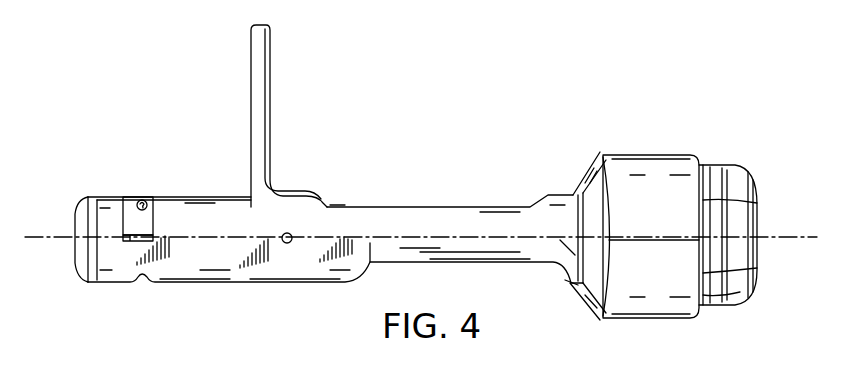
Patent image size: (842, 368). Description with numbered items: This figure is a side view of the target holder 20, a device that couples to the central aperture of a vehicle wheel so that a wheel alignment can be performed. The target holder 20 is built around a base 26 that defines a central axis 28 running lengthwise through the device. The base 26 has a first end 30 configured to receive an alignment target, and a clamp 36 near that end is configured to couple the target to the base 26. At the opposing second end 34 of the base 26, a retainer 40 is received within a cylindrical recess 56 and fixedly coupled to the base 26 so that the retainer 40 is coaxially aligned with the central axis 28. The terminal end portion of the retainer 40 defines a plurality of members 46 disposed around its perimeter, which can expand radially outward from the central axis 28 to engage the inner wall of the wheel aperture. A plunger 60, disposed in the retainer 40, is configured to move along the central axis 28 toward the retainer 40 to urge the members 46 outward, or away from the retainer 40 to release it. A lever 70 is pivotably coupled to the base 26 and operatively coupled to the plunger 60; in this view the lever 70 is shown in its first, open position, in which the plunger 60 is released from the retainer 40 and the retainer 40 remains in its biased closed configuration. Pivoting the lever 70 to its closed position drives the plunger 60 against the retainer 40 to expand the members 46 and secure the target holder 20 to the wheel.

The target holder 20 is at (501, 119).
The base 26 is at (245, 282).
The central axis 28 is at (42, 234).
The first end 30 is at (131, 303).
The second end 34 is at (670, 108).
The clamp 36 is at (148, 198).
The retainer 40 is at (720, 308).
The members 46 is at (732, 187).
The cylindrical recess 56 is at (706, 156).
The plunger 60 is at (759, 213).
The lever 70 is at (265, 90).